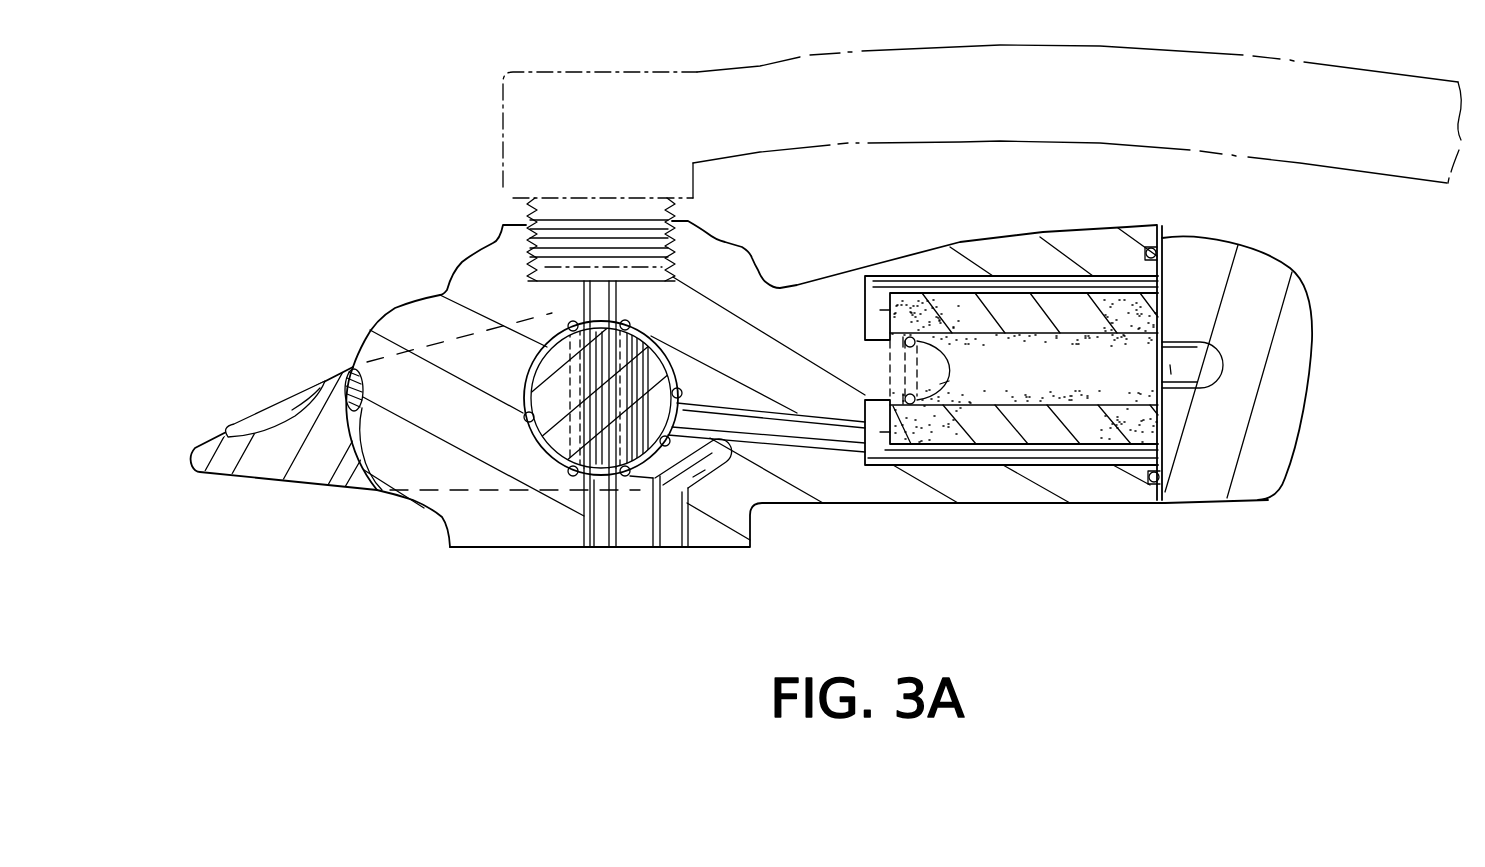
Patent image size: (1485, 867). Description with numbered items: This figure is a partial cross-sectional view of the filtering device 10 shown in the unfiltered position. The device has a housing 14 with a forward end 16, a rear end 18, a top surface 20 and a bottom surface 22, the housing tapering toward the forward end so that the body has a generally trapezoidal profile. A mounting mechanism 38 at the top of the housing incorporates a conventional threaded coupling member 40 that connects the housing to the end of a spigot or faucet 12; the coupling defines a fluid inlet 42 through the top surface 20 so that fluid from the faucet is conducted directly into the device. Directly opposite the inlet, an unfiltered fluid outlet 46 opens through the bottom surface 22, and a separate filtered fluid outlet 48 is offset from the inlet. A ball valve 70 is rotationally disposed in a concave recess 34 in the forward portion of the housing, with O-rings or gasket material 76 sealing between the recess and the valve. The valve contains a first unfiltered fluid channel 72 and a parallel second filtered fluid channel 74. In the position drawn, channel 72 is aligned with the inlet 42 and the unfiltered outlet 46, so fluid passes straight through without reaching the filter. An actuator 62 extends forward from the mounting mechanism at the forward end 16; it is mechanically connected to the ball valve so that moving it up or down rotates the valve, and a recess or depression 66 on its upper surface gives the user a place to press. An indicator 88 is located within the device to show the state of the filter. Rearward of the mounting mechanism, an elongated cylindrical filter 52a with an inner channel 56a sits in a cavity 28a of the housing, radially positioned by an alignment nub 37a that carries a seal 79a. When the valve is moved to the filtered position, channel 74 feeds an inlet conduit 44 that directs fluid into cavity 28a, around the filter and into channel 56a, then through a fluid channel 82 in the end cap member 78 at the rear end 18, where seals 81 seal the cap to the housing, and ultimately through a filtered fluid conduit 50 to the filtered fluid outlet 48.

The filtering device 10 is at (400, 96).
The spigot or faucet 12 is at (1008, 68).
The housing 14 is at (803, 313).
The forward end 16 is at (362, 343).
The rear end 18 is at (1165, 266).
The top surface 20 is at (953, 248).
The bottom surface 22 is at (877, 503).
The cavity 28a is at (1027, 447).
The concave cavity or recess 34 is at (527, 413).
The alignment nub 37a is at (973, 428).
The mounting mechanism 38 is at (477, 267).
The threaded coupling member 40 is at (503, 223).
The fluid inlet 42 is at (598, 292).
The inlet conduit 44 is at (783, 432).
The unfiltered fluid outlet 46 is at (605, 548).
The filtered fluid outlet 48 is at (672, 540).
The filtered fluid conduit 50 is at (705, 473).
The filter 52a is at (1100, 430).
The inner channel 56a is at (1052, 355).
The actuator 62 is at (273, 477).
The recess or depression 66 is at (267, 421).
The ball valve 70 is at (530, 425).
The first unfiltered fluid channel 72 is at (626, 476).
The second filtered fluid channel 74 is at (640, 388).
The O-rings or gasket material 76 is at (629, 322).
The end cap member 78 is at (1280, 382).
The seal 79a is at (957, 368).
The seals 81 is at (1153, 248).
The fluid channel 82 is at (1207, 362).
The indicator 88 is at (343, 386).